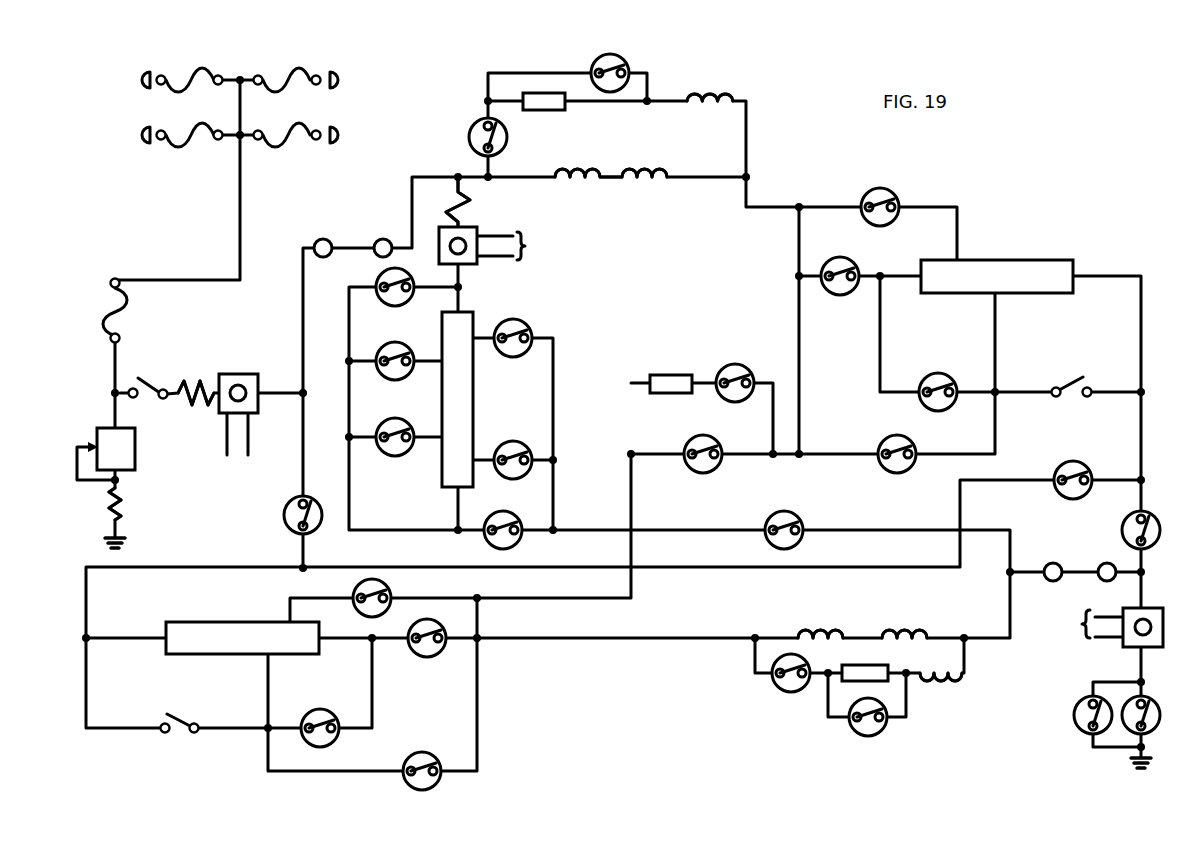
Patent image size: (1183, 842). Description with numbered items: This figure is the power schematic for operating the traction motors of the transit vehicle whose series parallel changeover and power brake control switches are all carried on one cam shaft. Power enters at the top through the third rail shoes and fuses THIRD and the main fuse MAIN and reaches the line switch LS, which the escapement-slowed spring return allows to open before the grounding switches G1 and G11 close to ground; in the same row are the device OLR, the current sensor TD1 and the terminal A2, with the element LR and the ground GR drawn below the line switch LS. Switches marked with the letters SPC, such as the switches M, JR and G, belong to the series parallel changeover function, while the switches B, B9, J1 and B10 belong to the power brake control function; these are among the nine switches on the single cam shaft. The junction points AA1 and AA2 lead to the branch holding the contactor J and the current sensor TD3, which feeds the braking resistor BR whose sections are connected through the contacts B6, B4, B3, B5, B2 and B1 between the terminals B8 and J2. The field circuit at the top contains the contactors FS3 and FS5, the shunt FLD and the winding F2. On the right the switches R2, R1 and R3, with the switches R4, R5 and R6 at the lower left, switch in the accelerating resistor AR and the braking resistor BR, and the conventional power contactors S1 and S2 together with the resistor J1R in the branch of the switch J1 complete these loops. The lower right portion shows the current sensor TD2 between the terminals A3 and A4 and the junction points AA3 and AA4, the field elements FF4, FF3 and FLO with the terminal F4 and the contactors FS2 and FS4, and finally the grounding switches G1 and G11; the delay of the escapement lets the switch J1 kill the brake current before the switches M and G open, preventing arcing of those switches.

The third rail shoes and fuses THIRD is at (240, 88).
The main fuse MAIN is at (156, 311).
The line switch LS is at (145, 421).
The overload relay OLR is at (200, 369).
The current sensor TD1 is at (249, 362).
The terminal A2 is at (318, 392).
The line resistor LR is at (132, 502).
The ground return GR is at (628, 654).
The series parallel changeover function designation SPC is at (275, 517).
The connector AA1 is at (365, 253).
The connector AA2 is at (339, 241).
The power contactor J is at (496, 203).
The current sensor TD3 is at (505, 287).
The field shunt contactor FS3 is at (540, 158).
The field shunt contactor FS5 is at (603, 79).
The field shunt inductor FLD is at (708, 118).
The field winding F2-FF1 F2 is at (611, 171).
The resistor switch R2 is at (858, 202).
The accelerating resistor AR is at (619, 457).
The resistor switch R1 is at (863, 344).
The resistor switch R3 is at (952, 440).
The power contactor S1 is at (1082, 426).
The cam-operated switch JR is at (1025, 471).
The cam-operated switch B9 is at (910, 521).
The resistor J1R is at (684, 367).
The cam-operated switch J1 is at (762, 358).
The terminal J2 is at (643, 468).
The cam-operated switch B is at (846, 516).
The CC contact B6 is at (356, 336).
The CC contact B4 is at (435, 409).
The CC contact B3 is at (405, 494).
The braking resistor BR is at (457, 399).
The CC contact B5 is at (555, 321).
The CC contact B2 is at (525, 432).
The CC contact B1 is at (573, 557).
The terminal B8 is at (567, 518).
The cam-operated switch G is at (1118, 549).
The terminal A3 is at (1158, 624).
The terminal A4 is at (998, 562).
The connector AA3 is at (1090, 563).
The connector AA4 is at (1068, 577).
The current sensor TD2 is at (1176, 604).
The grounding switch G1 is at (1058, 742).
The grounding switch G11 is at (1182, 773).
The field winding FF4 is at (862, 624).
The terminal F4 is at (740, 651).
The field shunt contactor FS2 is at (775, 731).
The resistor FF3 is at (865, 658).
The field shunt contactor FS4 is at (919, 766).
The field shunt inductor FLO is at (990, 718).
The resistor switch R5 is at (396, 595).
The resistor switch R4 is at (438, 696).
The resistor switch R6 is at (331, 699).
The power contactor S2 is at (186, 761).
The cam-operated switch M is at (97, 679).
The cam-operated switch B10 is at (435, 756).